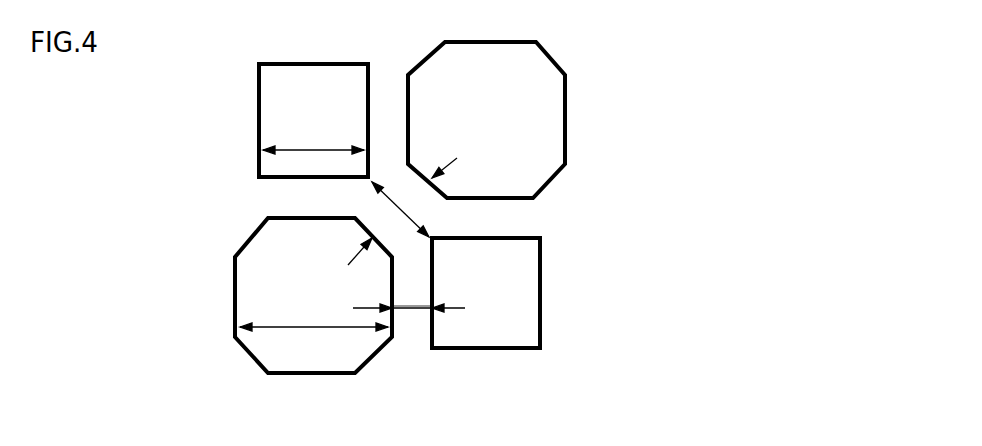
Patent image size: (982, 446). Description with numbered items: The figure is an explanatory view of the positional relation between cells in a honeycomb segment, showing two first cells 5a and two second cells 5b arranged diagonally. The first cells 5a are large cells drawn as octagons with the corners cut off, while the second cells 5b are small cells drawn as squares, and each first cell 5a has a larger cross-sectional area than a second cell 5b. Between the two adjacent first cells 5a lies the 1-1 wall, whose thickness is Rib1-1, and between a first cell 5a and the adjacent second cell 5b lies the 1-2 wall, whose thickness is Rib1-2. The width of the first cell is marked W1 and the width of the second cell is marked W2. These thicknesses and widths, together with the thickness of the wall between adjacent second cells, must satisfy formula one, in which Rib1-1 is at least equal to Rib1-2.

The first cell (large cell) 5a is at (567, 124).
The second cell (small cell) 5b is at (259, 113).
The 1-1 wall 1-1 is at (413, 197).
The 1-2 wall 1-2 is at (405, 312).
The thickness of the 1-1 wall Rib1-1 is at (431, 195).
The thickness of the 1-2 wall Rib1-2 is at (437, 292).
The width of the first cell W1 is at (314, 312).
The width of the second cell W2 is at (313, 136).